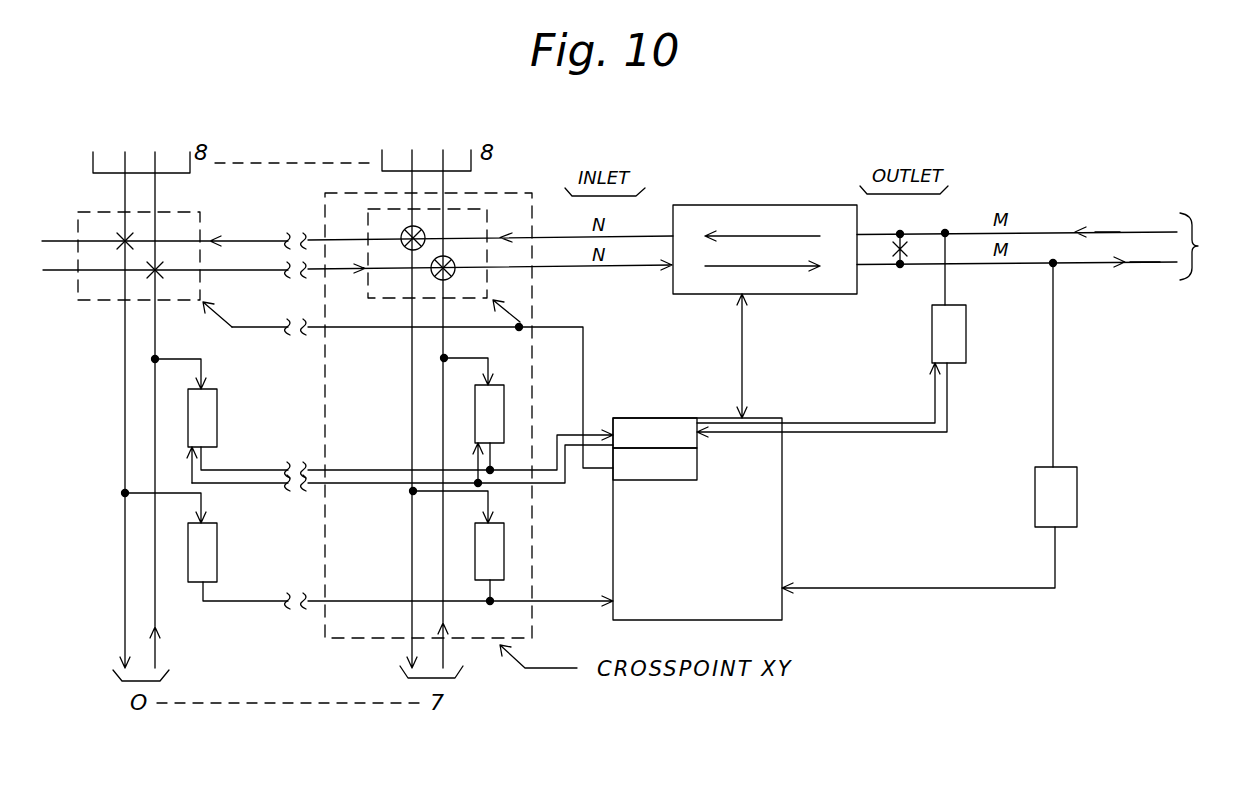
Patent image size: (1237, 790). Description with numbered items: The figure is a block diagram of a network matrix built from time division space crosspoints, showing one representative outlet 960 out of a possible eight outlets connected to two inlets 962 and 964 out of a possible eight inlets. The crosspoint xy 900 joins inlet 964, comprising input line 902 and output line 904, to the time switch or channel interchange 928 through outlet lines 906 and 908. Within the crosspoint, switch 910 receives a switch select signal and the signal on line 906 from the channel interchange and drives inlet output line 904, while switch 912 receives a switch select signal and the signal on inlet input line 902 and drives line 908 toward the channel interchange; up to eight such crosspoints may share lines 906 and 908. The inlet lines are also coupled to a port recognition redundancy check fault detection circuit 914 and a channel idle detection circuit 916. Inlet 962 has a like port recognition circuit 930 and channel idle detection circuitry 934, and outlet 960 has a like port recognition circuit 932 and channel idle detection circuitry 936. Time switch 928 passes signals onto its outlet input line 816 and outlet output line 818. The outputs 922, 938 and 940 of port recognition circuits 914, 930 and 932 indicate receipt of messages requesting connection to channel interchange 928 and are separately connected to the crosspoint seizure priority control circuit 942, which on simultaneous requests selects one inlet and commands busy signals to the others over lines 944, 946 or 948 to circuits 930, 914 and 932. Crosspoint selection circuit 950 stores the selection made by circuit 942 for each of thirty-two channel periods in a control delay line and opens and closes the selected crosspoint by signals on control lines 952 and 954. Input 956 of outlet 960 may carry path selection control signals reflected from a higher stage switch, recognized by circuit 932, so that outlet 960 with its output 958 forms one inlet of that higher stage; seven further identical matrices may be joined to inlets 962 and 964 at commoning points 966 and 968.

The crosspoint xy 900 is at (530, 184).
The input line of inlet x 902 is at (443, 160).
The output line of inlet x 904 is at (412, 160).
The input line of outlet y 906 is at (547, 240).
The output line of outlet y 908 is at (547, 269).
The switch 910 is at (403, 232).
The switch 912 is at (452, 263).
The port recognition redundancy check fault detection circuit 914 is at (492, 385).
The channel idle detection circuit 916 is at (492, 523).
The output of port recognition circuit 922 is at (492, 462).
The time switch (channel interchange) 928 is at (770, 205).
The port recognition redundancy check fault detection circuit 930 is at (217, 397).
The port recognition redundancy check fault detection circuit 932 is at (966, 323).
The channel idle detection circuitry 934 is at (217, 547).
The channel idle detection circuitry 936 is at (1077, 486).
The output of port recognition circuit 938 is at (228, 470).
The output of port recognition circuit 940 is at (948, 398).
The crosspoint seizure priority control circuit 942 is at (663, 427).
The busy signal line 944 is at (240, 485).
The busy signal line 946 is at (474, 476).
The busy signal line 948 is at (855, 423).
The crosspoint selection circuit 950 is at (618, 481).
The control line 952 is at (238, 322).
The control line 954 is at (516, 327).
The input of outlet 956 is at (1102, 232).
The output line of outlet 958 is at (1150, 255).
The outlet 960 is at (1198, 246).
The inlet 962 is at (169, 680).
The inlet 964 is at (457, 680).
The commoning point 966 is at (93, 166).
The commoning point 968 is at (382, 160).
The outlet input line 816 is at (922, 232).
The outlet output line 818 is at (926, 270).